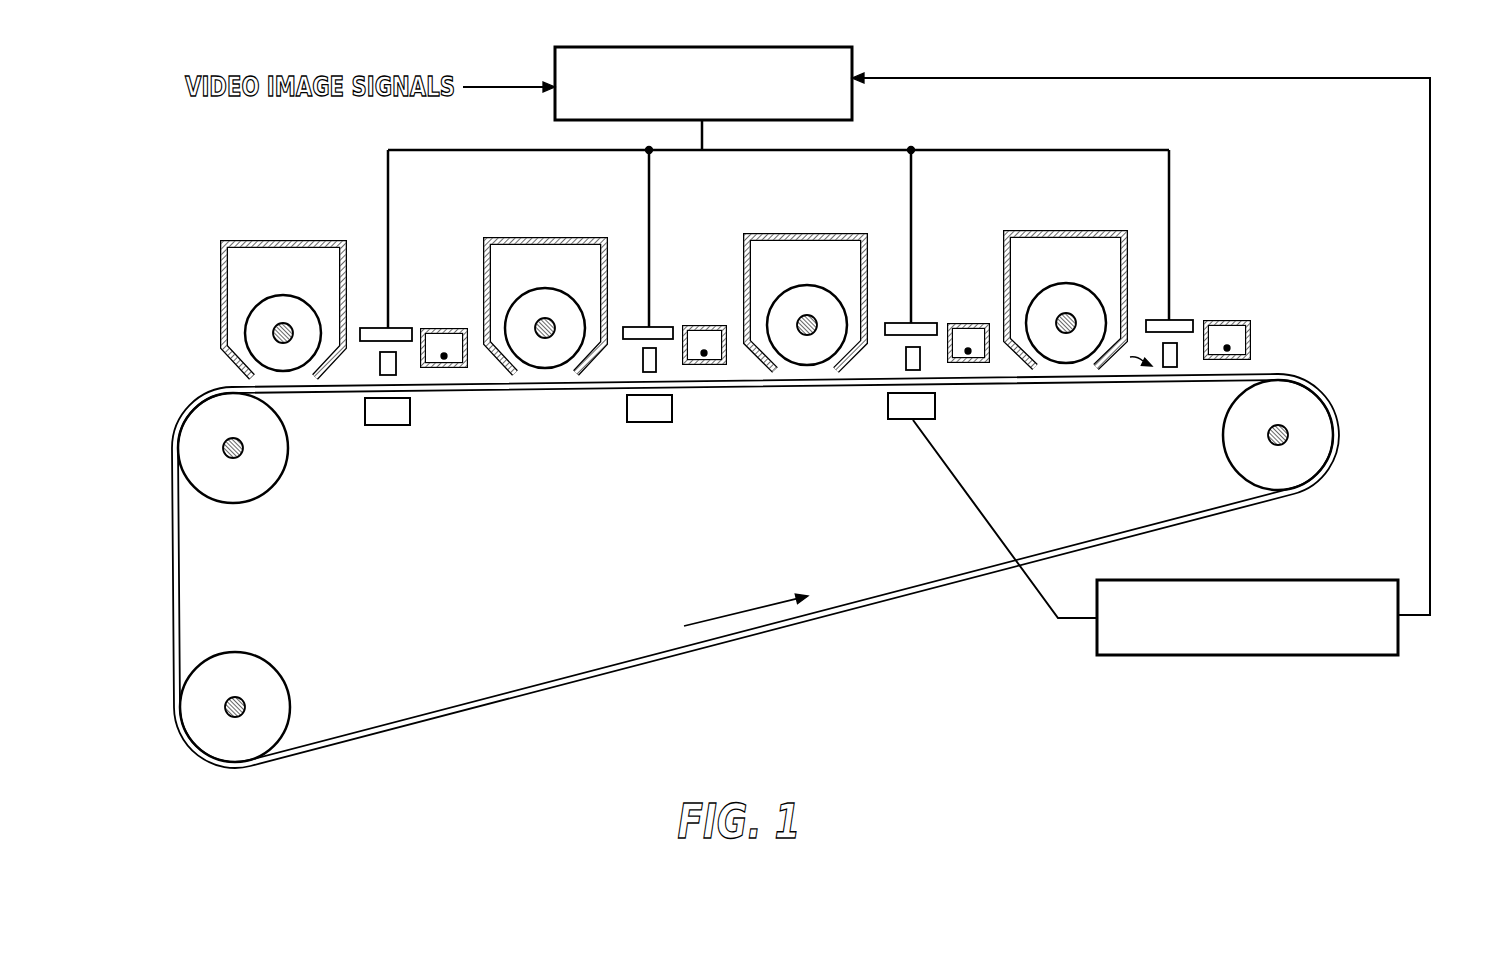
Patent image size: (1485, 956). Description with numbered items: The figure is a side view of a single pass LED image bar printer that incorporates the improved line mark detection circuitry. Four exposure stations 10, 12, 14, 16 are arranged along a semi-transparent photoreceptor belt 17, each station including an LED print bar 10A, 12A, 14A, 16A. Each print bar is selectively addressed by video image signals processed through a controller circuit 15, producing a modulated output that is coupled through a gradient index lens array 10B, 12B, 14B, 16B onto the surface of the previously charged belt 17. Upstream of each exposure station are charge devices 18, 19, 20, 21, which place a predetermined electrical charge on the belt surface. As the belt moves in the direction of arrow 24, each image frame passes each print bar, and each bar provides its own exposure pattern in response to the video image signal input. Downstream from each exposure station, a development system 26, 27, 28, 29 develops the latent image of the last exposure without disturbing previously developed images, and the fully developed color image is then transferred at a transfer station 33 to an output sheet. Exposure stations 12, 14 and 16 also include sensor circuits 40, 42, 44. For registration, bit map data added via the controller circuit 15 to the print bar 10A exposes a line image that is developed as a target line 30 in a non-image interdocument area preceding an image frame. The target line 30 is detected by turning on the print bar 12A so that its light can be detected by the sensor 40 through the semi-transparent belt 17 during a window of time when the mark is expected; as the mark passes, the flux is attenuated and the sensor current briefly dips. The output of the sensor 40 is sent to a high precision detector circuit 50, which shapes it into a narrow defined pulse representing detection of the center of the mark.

The exposure station 10 is at (1133, 322).
The exposure station 12 is at (875, 301).
The exposure station 14 is at (613, 304).
The exposure station 16 is at (351, 308).
The LED print bar 10A is at (1180, 330).
The LED print bar 12A is at (921, 330).
The LED print bar 14A is at (661, 333).
The LED print bar 16A is at (393, 335).
The gradient index lens array 10B is at (1170, 367).
The gradient index lens array 12B is at (921, 360).
The gradient index lens array 14B is at (657, 362).
The gradient index lens array 16B is at (397, 365).
The controller circuit 15 is at (827, 57).
The semi-transparent photoreceptor belt 17 is at (522, 692).
The charge device 18 is at (1238, 322).
The charge device 19 is at (975, 323).
The charge device 20 is at (718, 326).
The charge device 21 is at (452, 328).
The arrow 24 is at (730, 612).
The development system 26 is at (1073, 231).
The development system 27 is at (811, 233).
The development system 28 is at (560, 237).
The development system 29 is at (283, 240).
The target line 30 is at (1126, 362).
The transfer station 33 is at (711, 578).
The sensor circuit 40 is at (903, 419).
The sensor circuit 42 is at (647, 422).
The sensor circuit 44 is at (384, 425).
The high precision detector circuit 50 is at (1372, 592).